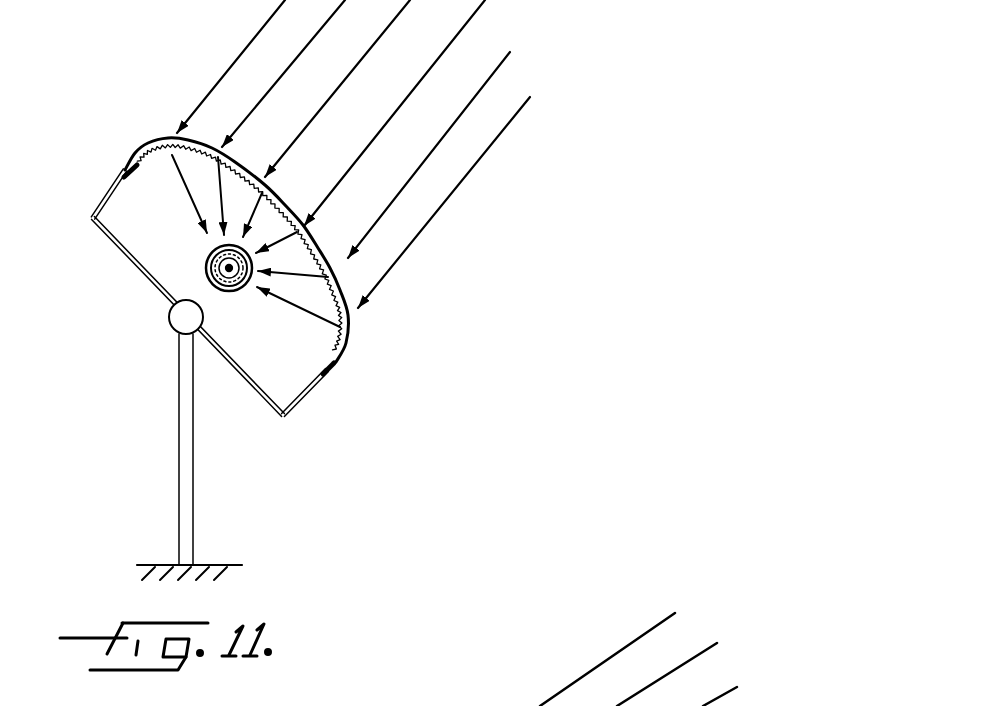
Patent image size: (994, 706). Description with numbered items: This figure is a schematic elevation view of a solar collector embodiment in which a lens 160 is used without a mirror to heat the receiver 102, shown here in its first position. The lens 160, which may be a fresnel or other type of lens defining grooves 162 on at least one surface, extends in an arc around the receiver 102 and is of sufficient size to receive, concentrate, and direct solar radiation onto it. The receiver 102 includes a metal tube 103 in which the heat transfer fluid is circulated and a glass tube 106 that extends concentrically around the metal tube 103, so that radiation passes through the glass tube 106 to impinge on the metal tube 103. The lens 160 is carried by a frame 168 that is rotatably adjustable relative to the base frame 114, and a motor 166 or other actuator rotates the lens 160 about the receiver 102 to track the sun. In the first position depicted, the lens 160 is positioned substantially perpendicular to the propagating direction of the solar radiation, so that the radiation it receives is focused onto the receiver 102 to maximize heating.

The lens 160 is at (347, 288).
The grooves 162 is at (182, 148).
The frame 168 is at (135, 268).
The receiver 102 is at (190, 262).
The metal tube 103 is at (209, 256).
The glass tube 106 is at (238, 290).
The motor 166 is at (171, 325).
The base frame 114 is at (178, 472).